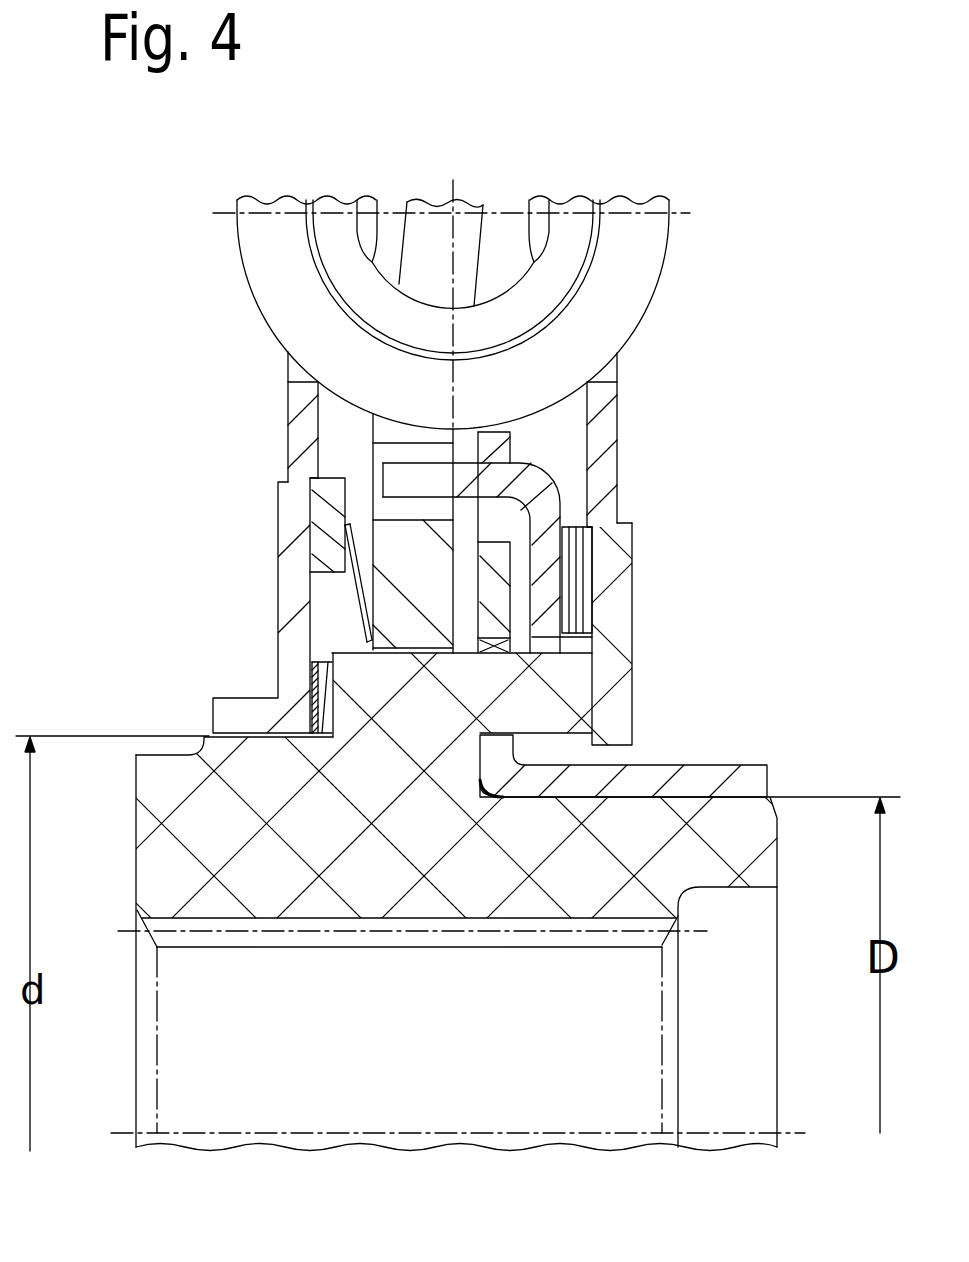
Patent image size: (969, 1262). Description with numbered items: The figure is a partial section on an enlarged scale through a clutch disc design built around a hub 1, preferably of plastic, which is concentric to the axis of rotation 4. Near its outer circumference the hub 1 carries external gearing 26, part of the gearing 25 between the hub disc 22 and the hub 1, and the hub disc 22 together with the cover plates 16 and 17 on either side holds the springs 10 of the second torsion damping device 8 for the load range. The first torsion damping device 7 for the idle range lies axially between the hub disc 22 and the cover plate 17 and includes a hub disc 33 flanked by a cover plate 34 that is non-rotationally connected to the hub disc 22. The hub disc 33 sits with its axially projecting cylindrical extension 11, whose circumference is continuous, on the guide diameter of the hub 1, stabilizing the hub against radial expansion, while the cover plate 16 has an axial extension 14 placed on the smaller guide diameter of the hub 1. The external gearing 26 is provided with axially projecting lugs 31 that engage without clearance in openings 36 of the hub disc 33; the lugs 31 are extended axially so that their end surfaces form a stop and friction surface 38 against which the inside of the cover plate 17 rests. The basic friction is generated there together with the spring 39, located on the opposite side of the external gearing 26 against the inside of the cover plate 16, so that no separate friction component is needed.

The hub 1 is at (162, 796).
The axis of rotation 4 is at (447, 1129).
The first torsion damping device 7 is at (673, 537).
The second torsion damping device 8 is at (690, 243).
The springs 10 is at (370, 302).
The axial extension 11 is at (753, 780).
The extension 14 is at (232, 713).
The cover plate 16 is at (301, 420).
The cover plate 17 is at (603, 390).
The hub disc 22 is at (428, 226).
The gearing 25 is at (355, 638).
The external gearing 26 is at (478, 684).
The lugs 31 is at (555, 715).
The hub disc 33 is at (497, 563).
The cover plate 34 is at (538, 486).
The openings 36 is at (497, 645).
The stop and friction surface 38 is at (596, 692).
The spring 39 is at (312, 672).